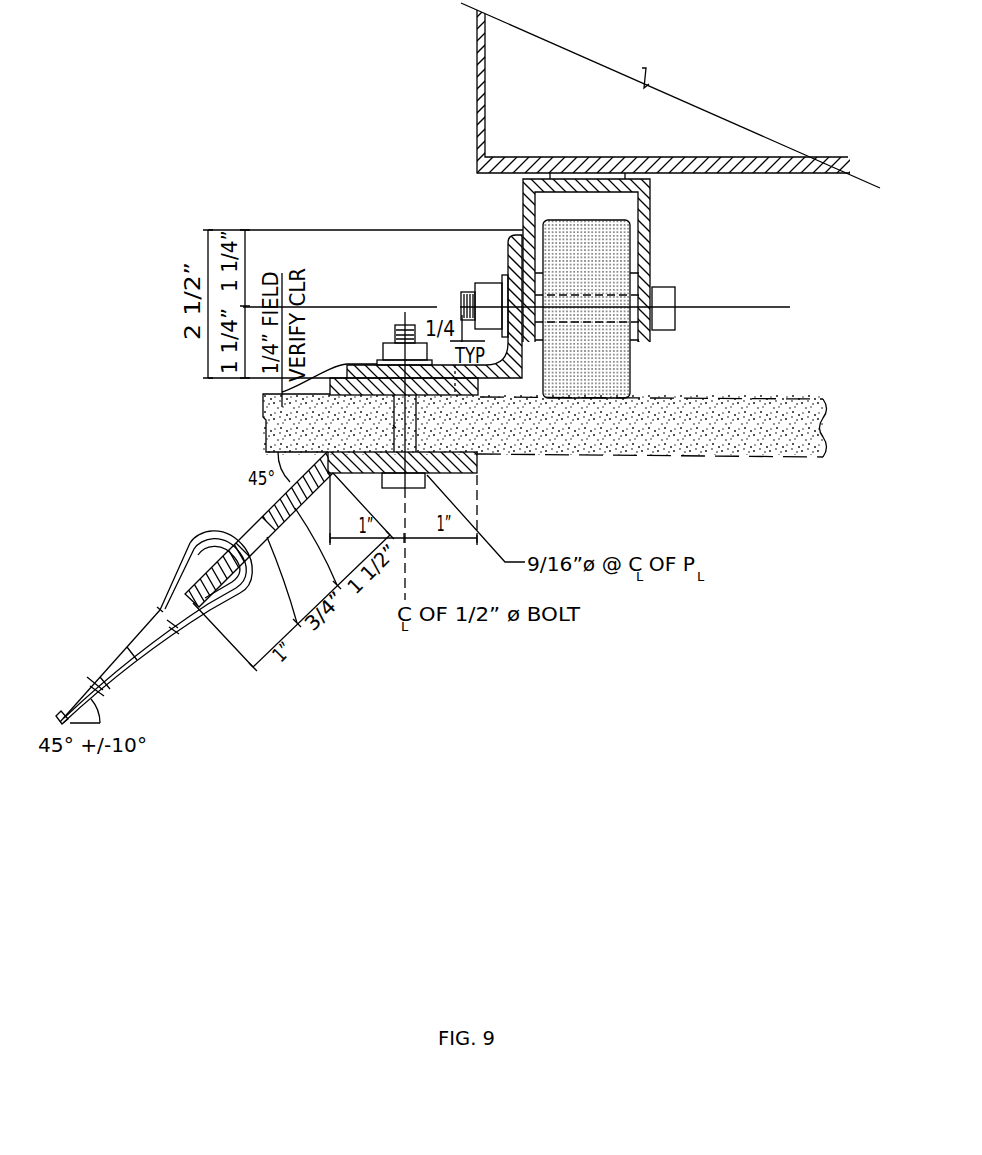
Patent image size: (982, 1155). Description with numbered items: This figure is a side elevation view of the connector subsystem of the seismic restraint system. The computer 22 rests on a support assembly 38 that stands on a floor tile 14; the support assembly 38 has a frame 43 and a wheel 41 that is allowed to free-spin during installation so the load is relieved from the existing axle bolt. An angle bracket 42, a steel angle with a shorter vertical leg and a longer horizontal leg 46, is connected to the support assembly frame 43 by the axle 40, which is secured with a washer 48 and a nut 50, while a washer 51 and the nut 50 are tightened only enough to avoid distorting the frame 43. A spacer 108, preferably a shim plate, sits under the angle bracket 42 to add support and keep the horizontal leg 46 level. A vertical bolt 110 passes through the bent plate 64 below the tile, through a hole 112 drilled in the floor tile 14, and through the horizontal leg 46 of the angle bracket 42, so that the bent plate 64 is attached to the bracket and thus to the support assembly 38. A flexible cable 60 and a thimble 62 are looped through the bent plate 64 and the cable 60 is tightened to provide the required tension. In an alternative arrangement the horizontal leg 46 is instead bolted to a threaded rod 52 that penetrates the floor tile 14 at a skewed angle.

The computer 22 is at (593, 58).
The support assembly frame 43 is at (652, 210).
The wheel 41 is at (630, 372).
The angle bracket 42 is at (672, 298).
The washer 48 is at (513, 232).
The nut 50 is at (493, 279).
The axle 40 is at (420, 362).
The bolt 110 is at (400, 328).
The rod 52 is at (377, 360).
The washer 51 is at (327, 378).
The hole 112 is at (393, 425).
The support assembly 38 is at (328, 320).
The horizontal leg 46 is at (432, 386).
The spacer 108 is at (455, 385).
The floor tile 14 is at (783, 458).
The bent plate 64 is at (338, 588).
The thimble 62 is at (188, 625).
The cable 60 is at (107, 684).